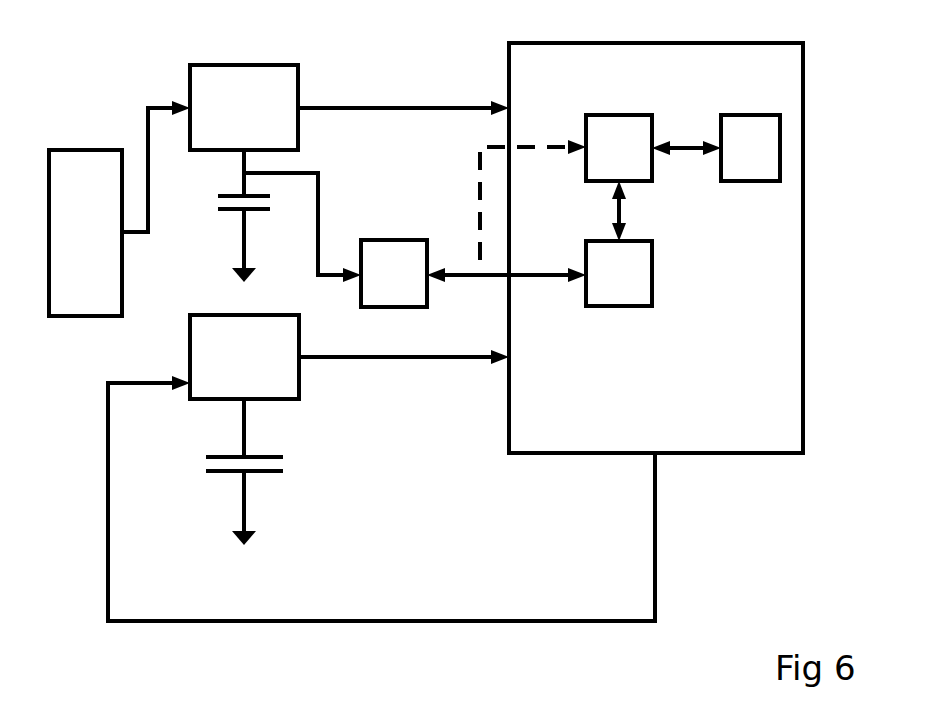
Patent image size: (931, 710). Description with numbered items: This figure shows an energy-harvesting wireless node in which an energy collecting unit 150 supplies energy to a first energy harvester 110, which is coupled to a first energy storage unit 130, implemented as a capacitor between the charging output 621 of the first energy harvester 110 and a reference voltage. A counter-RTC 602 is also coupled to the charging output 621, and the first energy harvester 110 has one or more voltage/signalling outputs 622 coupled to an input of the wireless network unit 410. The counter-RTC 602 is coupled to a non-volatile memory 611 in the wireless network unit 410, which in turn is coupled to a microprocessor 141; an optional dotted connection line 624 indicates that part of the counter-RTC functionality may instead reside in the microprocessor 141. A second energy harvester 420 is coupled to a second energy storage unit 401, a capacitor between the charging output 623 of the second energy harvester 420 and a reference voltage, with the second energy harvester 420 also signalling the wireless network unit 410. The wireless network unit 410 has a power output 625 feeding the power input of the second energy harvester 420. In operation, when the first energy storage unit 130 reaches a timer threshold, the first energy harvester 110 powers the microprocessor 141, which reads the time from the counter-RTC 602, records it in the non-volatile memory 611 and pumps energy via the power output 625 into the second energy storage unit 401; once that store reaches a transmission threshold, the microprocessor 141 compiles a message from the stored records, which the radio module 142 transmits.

The first energy harvester 110 is at (240, 102).
The energy collecting unit 150 is at (107, 247).
The first energy storage unit 130 is at (242, 217).
The voltage/signalling outputs 622 is at (435, 106).
The charging output 621 is at (320, 187).
The counter-RTC 602 is at (473, 273).
The wireless network unit 410 is at (558, 78).
The microprocessor 141 is at (639, 160).
The radio module 142 is at (771, 160).
The non-volatile memory 611 is at (639, 285).
The second energy harvester 420 is at (240, 351).
The connection line 624 is at (453, 362).
The charging output 623 is at (247, 430).
The second energy storage unit 401 is at (238, 477).
The power output 625 is at (377, 623).